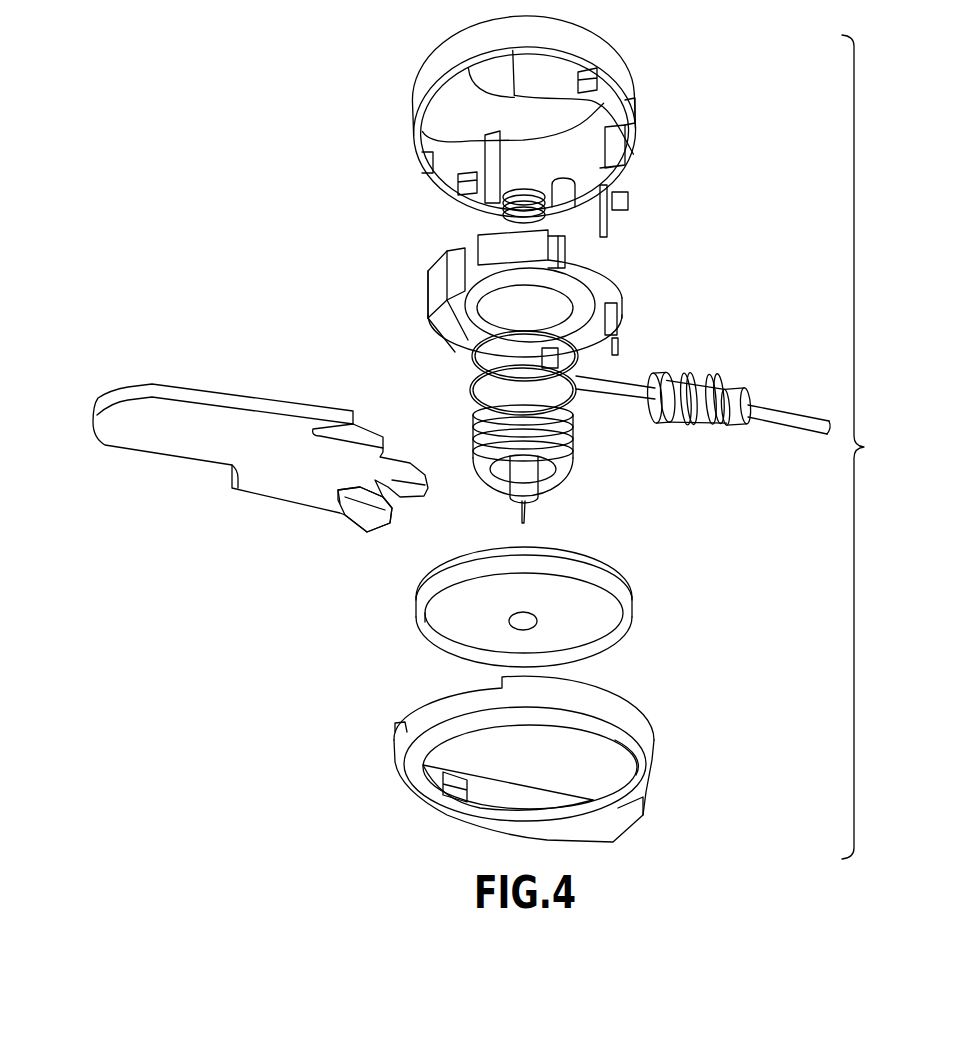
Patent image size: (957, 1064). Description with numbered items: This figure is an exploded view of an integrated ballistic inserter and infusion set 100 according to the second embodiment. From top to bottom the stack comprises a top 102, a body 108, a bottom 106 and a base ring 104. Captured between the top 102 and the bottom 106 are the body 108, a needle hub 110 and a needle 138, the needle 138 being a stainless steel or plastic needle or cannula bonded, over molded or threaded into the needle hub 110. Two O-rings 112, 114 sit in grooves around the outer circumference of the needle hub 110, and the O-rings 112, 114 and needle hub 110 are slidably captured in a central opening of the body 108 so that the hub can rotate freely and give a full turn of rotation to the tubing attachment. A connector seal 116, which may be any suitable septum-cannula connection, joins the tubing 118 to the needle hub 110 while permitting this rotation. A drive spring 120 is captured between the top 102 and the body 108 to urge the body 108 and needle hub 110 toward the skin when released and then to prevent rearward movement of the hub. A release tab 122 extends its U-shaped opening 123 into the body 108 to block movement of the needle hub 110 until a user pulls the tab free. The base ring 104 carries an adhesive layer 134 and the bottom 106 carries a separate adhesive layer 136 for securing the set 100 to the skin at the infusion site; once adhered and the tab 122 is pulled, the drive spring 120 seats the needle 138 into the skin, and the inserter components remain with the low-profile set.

The integrated ballistic inserter and infusion set 100 is at (320, 238).
The top 102 is at (413, 92).
The base ring 104 is at (393, 763).
The bottom 106 is at (422, 597).
The body 108 is at (619, 278).
The needle hub 110 is at (573, 468).
The O-ring 112 is at (433, 312).
The O-ring 114 is at (474, 391).
The connector seal 116 is at (697, 432).
The tubing 118 is at (772, 408).
The drive spring 120 is at (458, 181).
The release tab 122 is at (97, 408).
The U-shaped opening 123 is at (350, 500).
The adhesive layer 134 is at (633, 773).
The adhesive layer 136 is at (590, 640).
The needle 138 is at (526, 513).